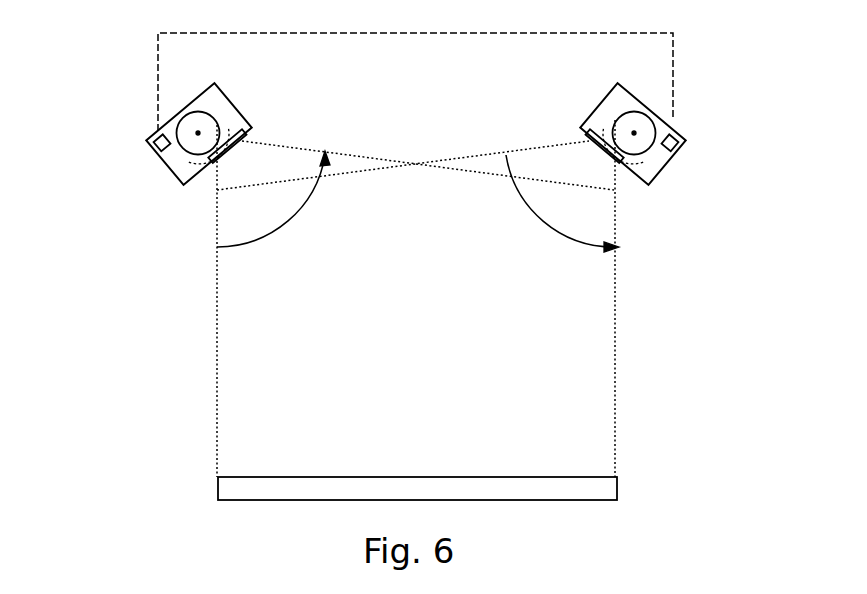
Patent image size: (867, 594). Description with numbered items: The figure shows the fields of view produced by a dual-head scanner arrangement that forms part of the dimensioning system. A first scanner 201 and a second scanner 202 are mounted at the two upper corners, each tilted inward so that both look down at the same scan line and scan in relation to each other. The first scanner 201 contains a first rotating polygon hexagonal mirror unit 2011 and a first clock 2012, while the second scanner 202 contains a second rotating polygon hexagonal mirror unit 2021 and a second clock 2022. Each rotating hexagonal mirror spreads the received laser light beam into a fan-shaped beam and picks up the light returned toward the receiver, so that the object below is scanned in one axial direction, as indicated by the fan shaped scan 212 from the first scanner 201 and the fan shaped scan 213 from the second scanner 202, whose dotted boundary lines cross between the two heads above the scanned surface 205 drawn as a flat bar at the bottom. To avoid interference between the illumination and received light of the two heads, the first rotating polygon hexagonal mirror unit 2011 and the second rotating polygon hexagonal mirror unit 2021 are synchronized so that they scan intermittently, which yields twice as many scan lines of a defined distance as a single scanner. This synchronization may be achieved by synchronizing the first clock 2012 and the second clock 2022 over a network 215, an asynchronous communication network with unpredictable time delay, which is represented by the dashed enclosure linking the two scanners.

The first scanner 201 is at (158, 117).
The first rotating polygon hexagonal mirror unit 2011 is at (183, 118).
The first clock 2012 is at (148, 145).
The second scanner 202 is at (681, 117).
The second rotating polygon hexagonal mirror unit 2021 is at (653, 117).
The second clock 2022 is at (683, 137).
The fan shaped scan 212 is at (227, 175).
The fan shaped scan 213 is at (604, 168).
The network 215 is at (475, 33).
The object / display surface 205 is at (417, 492).